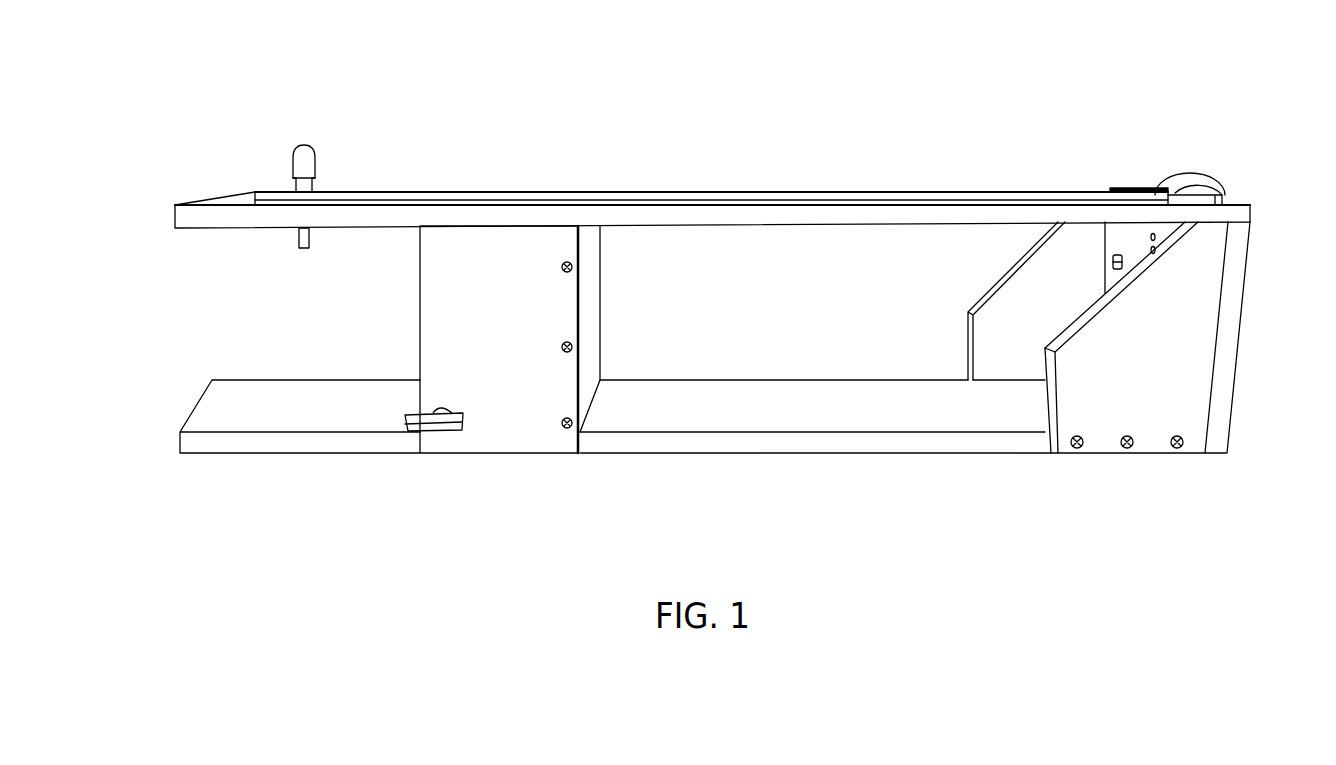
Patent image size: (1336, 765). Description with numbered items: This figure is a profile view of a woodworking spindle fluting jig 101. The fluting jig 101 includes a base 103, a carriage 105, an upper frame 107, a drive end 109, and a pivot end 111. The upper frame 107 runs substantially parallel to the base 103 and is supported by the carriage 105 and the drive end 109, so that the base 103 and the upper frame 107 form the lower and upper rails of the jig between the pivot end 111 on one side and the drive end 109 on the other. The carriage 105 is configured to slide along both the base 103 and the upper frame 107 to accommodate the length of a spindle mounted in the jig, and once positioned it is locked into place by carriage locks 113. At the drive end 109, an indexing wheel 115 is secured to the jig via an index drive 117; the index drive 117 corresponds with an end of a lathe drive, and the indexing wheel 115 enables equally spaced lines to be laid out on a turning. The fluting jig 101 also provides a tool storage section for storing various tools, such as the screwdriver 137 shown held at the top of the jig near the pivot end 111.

The fluting jig 101 is at (218, 136).
The base 103 is at (638, 443).
The carriage 105 is at (420, 316).
The upper frame 107 is at (953, 191).
The drive end 109 is at (1250, 315).
The pivot end 111 is at (151, 278).
The carriage lock 113 is at (437, 436).
The indexing wheel 115 is at (1193, 174).
The index drive 117 is at (1112, 262).
The screwdriver 137 is at (316, 165).